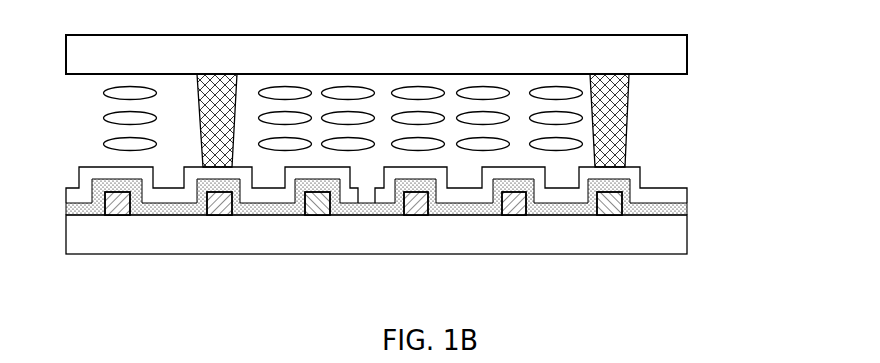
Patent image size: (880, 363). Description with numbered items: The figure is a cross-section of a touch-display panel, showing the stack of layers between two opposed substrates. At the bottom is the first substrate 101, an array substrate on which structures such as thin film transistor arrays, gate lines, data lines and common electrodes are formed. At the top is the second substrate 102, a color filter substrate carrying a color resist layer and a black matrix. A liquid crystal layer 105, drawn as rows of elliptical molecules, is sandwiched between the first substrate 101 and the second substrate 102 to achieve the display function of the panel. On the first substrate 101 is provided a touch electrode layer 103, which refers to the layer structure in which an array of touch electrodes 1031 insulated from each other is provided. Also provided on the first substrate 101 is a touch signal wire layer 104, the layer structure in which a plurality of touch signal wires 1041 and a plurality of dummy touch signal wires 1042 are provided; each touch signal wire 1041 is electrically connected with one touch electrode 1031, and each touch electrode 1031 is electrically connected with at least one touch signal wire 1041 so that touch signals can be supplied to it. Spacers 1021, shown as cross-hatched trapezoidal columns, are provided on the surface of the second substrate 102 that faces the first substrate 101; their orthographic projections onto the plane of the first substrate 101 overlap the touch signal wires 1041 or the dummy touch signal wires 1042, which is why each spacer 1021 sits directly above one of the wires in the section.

The first substrate 101 is at (688, 233).
The second substrate 102 is at (688, 55).
The spacer 1021 is at (628, 135).
The touch electrode layer 103 is at (688, 195).
The touch electrode 1031 is at (545, 197).
The touch signal wire layer 104 is at (318, 211).
The touch signal wire 1041 is at (218, 212).
The dummy touch signal wire 1042 is at (612, 213).
The liquid crystal layer 105 is at (131, 92).